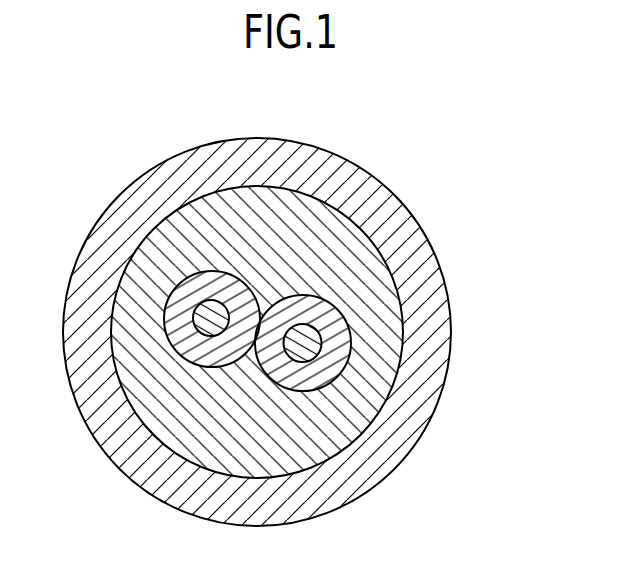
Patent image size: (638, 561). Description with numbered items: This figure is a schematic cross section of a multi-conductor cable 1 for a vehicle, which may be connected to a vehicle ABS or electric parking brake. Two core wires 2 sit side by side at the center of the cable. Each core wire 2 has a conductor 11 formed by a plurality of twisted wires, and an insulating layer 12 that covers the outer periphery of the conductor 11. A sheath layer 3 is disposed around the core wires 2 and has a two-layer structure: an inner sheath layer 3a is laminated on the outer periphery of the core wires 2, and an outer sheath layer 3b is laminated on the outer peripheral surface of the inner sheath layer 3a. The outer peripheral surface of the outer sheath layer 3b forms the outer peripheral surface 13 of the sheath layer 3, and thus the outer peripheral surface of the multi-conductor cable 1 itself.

The multi-conductor cable 1 is at (518, 170).
The core wires 2 is at (338, 312).
The sheath layer 3 is at (517, 442).
The inner sheath layer 3a is at (383, 365).
The outer sheath layer 3b is at (408, 417).
The conductor 11 is at (313, 338).
The insulating layer 12 is at (342, 338).
The outer peripheral surface 13 is at (385, 478).